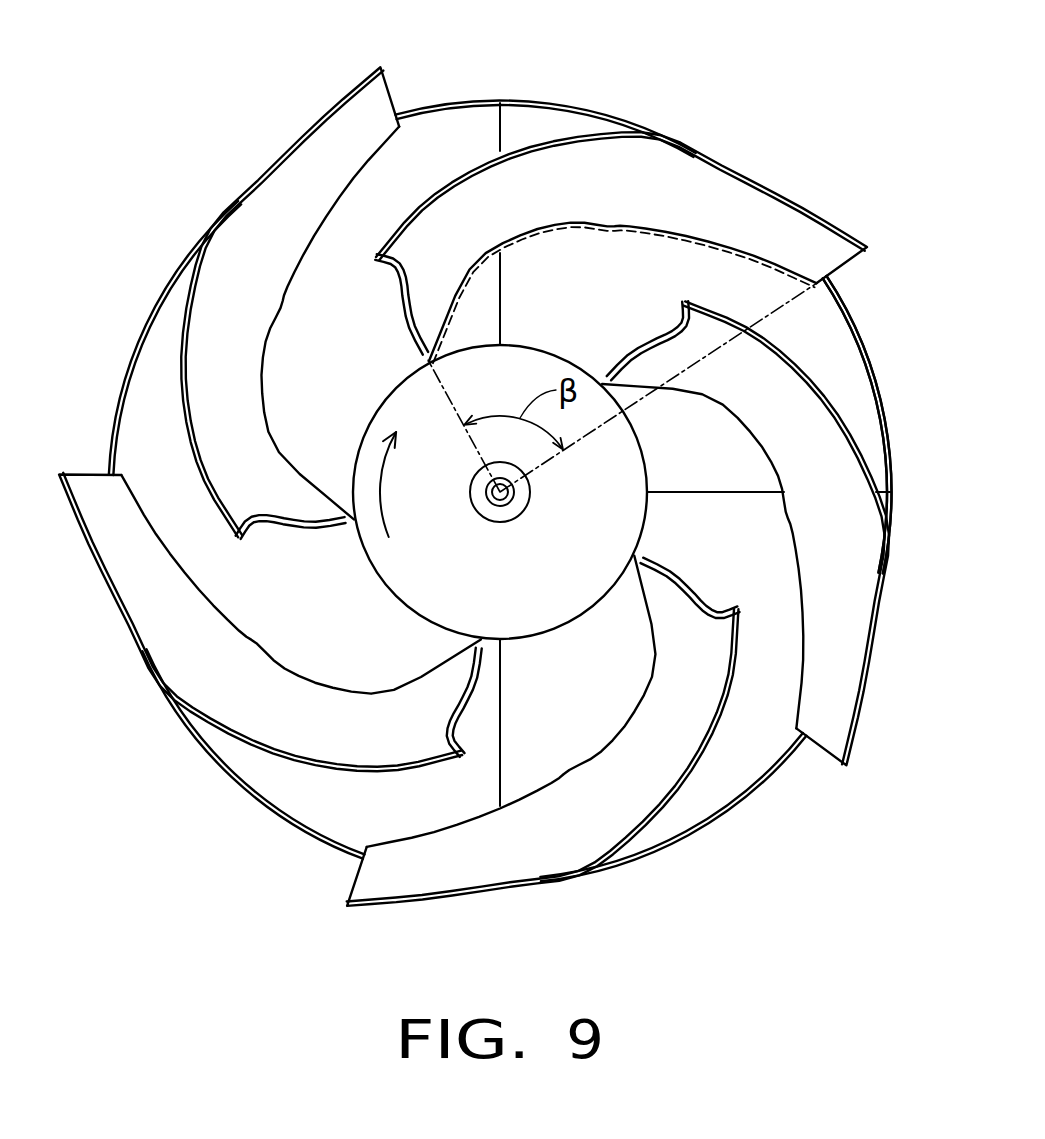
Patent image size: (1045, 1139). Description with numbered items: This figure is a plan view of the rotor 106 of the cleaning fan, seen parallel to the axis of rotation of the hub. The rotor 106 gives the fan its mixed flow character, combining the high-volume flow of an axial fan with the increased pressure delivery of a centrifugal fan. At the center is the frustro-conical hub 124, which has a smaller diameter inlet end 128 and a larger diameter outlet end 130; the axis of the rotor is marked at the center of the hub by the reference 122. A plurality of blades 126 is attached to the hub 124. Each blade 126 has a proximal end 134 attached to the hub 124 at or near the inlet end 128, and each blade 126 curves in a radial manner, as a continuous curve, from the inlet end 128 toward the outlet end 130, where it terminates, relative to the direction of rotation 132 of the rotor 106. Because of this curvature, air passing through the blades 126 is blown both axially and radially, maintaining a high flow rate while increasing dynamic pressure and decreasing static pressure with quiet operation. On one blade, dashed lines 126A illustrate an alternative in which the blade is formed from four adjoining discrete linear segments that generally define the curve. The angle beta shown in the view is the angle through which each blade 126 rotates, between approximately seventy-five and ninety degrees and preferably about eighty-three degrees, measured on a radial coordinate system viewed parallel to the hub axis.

The rotor 106 is at (187, 182).
The central axis / shaft bore 122 is at (505, 498).
The hub 124 is at (438, 135).
The blades 126 is at (717, 190).
The dashed lines 126A is at (628, 238).
The inlet end 128 is at (648, 462).
The outlet end 130 is at (860, 333).
The direction of rotation 132 is at (381, 487).
The proximal end 134 is at (400, 307).